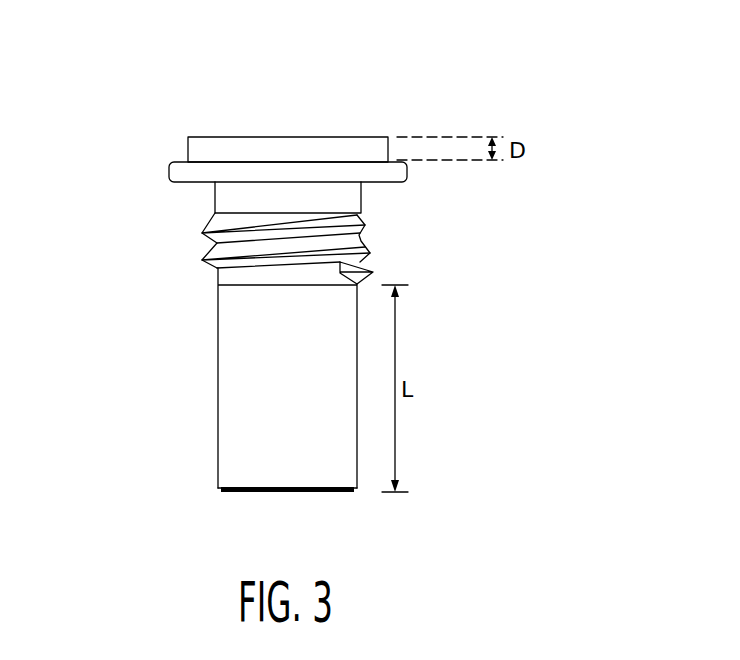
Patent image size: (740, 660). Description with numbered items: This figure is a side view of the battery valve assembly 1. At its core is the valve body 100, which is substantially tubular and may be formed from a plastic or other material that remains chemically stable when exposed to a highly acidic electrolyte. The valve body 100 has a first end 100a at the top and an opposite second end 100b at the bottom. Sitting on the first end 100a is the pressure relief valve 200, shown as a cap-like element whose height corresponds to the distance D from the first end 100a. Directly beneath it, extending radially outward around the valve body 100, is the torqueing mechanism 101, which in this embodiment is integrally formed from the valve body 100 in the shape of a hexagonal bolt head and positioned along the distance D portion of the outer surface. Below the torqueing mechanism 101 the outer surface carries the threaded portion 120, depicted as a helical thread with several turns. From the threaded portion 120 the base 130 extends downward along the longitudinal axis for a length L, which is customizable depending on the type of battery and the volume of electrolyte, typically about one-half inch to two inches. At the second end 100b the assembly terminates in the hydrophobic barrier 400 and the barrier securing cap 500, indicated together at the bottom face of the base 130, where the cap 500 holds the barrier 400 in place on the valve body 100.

The battery valve assembly 1 is at (581, 212).
The valve body 100 is at (206, 317).
The first end 100a is at (206, 137).
The second end 100b is at (217, 482).
The torqueing mechanism 101 is at (195, 150).
The threaded portion 120 is at (372, 245).
The base 130 is at (250, 380).
The pressure relief valve 200 is at (368, 137).
The hydrophobic barrier 400 is at (248, 525).
The barrier securing cap 500 is at (245, 492).